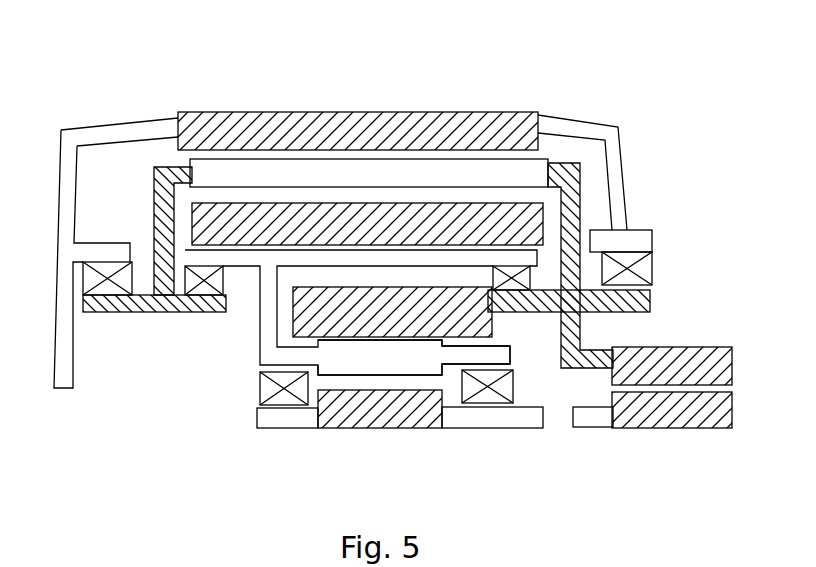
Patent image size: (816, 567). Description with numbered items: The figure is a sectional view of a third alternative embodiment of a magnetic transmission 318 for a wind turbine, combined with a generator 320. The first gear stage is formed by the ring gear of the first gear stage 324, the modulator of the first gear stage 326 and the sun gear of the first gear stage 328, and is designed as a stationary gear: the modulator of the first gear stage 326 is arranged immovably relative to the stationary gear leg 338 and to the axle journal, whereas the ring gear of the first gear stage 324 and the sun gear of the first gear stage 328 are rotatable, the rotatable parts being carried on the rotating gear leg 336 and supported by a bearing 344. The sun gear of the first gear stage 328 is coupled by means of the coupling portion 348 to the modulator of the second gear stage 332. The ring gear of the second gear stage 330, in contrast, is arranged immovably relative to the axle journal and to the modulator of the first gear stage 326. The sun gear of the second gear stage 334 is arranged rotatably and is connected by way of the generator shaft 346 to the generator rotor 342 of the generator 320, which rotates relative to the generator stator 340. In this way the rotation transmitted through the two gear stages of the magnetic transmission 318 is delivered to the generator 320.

The magnetic transmission 318 is at (650, 112).
The generator 320 is at (688, 293).
The ring gear of the first gear stage 324 is at (199, 130).
The modulator of the first gear stage 326 is at (260, 168).
The sun gear of the first gear stage 328 is at (312, 218).
The ring gear of the second gear stage 330 is at (415, 293).
The modulator of the second gear stage 332 is at (365, 367).
The sun gear of the second gear stage 334 is at (417, 418).
The gear leg rotating 336 is at (90, 137).
The gear leg stationary 338 is at (573, 163).
The generator stator 340 is at (700, 355).
The generator rotor 342 is at (695, 412).
The bearing 344 is at (108, 267).
The generator shaft 346 is at (557, 429).
The coupling portion 348 is at (346, 258).